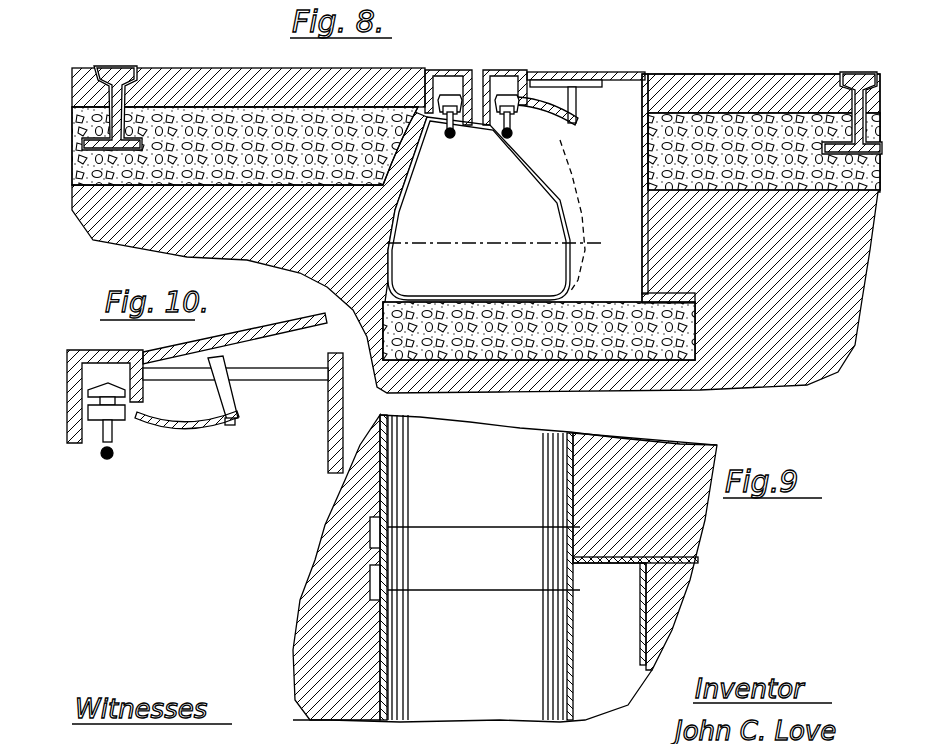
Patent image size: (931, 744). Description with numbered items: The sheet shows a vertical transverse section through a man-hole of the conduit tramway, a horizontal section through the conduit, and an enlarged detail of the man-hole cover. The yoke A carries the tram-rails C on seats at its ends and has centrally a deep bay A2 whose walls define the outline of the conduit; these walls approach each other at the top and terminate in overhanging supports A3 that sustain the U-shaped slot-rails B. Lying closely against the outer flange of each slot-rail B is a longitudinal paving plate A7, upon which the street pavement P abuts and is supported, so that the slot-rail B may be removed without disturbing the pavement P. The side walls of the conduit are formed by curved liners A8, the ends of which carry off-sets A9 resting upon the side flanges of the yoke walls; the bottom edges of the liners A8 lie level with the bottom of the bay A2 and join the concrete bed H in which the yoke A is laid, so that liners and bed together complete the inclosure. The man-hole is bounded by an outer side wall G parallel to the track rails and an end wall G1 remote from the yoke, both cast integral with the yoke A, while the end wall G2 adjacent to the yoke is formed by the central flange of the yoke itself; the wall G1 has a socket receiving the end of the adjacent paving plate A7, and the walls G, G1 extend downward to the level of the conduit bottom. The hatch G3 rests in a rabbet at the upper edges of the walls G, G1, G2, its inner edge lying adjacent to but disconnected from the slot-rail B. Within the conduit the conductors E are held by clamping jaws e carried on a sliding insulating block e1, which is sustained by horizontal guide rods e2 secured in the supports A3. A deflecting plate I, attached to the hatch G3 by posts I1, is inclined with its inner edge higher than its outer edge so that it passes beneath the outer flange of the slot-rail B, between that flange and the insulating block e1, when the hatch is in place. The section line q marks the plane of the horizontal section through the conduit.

In FIG. 8, the tram-rail C is at (104, 72).
In FIG. 8, the street pavement P is at (222, 82).
In FIG. 8, the yoke A is at (479, 208).
In FIG. 9, the yoke A is at (575, 540).
In FIG. 8, the bay A2 is at (480, 210).
In FIG. 8, the overhanging support A3 is at (436, 135).
In FIG. 8, the paving plate A7 is at (424, 82).
In FIG. 8, the liner A8 is at (390, 232).
In FIG. 9, the liner A8 is at (390, 462).
In FIG. 9, the off-set A9 is at (390, 582).
In FIG. 8, the slot-rail B is at (423, 165).
In FIG. 10, the slot-rail B is at (105, 381).
In FIG. 8, the clamping jaws e is at (507, 125).
In FIG. 10, the clamping jaws e is at (113, 443).
In FIG. 8, the insulating block e1 is at (510, 95).
In FIG. 10, the insulating block e1 is at (106, 390).
In FIG. 8, the guide rod e2 is at (518, 105).
In FIG. 10, the guide rod e2 is at (118, 410).
In FIG. 8, the conductor E is at (512, 138).
In FIG. 10, the conductor E is at (106, 462).
In FIG. 8, the side wall of man-hole G is at (642, 186).
In FIG. 9, the side wall of man-hole G is at (640, 622).
In FIG. 10, the side wall of man-hole G is at (328, 455).
In FIG. 8, the end wall of man-hole G1 is at (670, 294).
In FIG. 8, the end wall adjacent to yoke G2 is at (607, 190).
In FIG. 10, the end wall adjacent to yoke G2 is at (235, 412).
In FIG. 8, the hatch G3 is at (609, 72).
In FIG. 10, the hatch G3 is at (235, 324).
In FIG. 8, the concrete bed H is at (522, 305).
In FIG. 8, the deflecting plate I is at (576, 124).
In FIG. 10, the deflecting plate I is at (198, 425).
In FIG. 8, the post I1 is at (577, 106).
In FIG. 10, the post I1 is at (236, 405).
In FIG. 8, the section line q is at (482, 240).